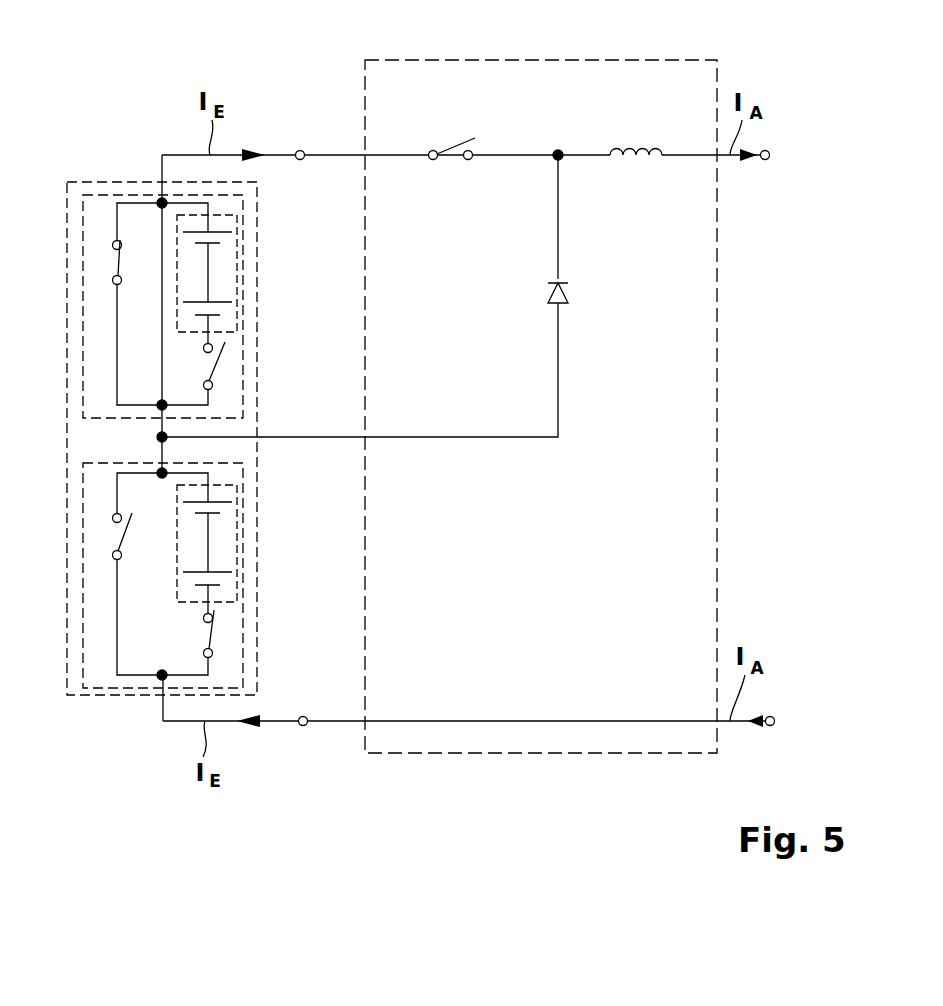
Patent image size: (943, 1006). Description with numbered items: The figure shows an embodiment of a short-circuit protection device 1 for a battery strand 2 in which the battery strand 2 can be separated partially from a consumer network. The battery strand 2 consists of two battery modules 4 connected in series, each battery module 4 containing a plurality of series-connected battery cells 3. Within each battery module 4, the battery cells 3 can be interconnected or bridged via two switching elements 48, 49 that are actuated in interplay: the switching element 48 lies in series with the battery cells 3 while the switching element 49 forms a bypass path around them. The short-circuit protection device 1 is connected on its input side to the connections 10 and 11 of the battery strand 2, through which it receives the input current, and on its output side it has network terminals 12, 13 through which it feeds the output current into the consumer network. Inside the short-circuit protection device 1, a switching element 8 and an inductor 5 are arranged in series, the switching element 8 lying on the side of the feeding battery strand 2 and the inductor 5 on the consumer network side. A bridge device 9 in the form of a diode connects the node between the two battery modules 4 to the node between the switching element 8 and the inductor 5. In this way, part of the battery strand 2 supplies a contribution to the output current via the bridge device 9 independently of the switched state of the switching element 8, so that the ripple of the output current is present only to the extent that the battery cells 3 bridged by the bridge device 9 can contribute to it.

The short-circuit protection device 1 is at (605, 58).
The battery strand 2 is at (97, 700).
The battery cell 3 is at (220, 238).
The battery module 4 is at (112, 193).
The inductor 5 is at (655, 146).
The switching element 8 is at (455, 140).
The bridge device 9 is at (546, 290).
The connection 10 is at (300, 149).
The connection 11 is at (303, 727).
The network terminal 12 is at (770, 155).
The network terminal 13 is at (775, 721).
The switching element 48 is at (222, 360).
The switching element 49 is at (113, 258).